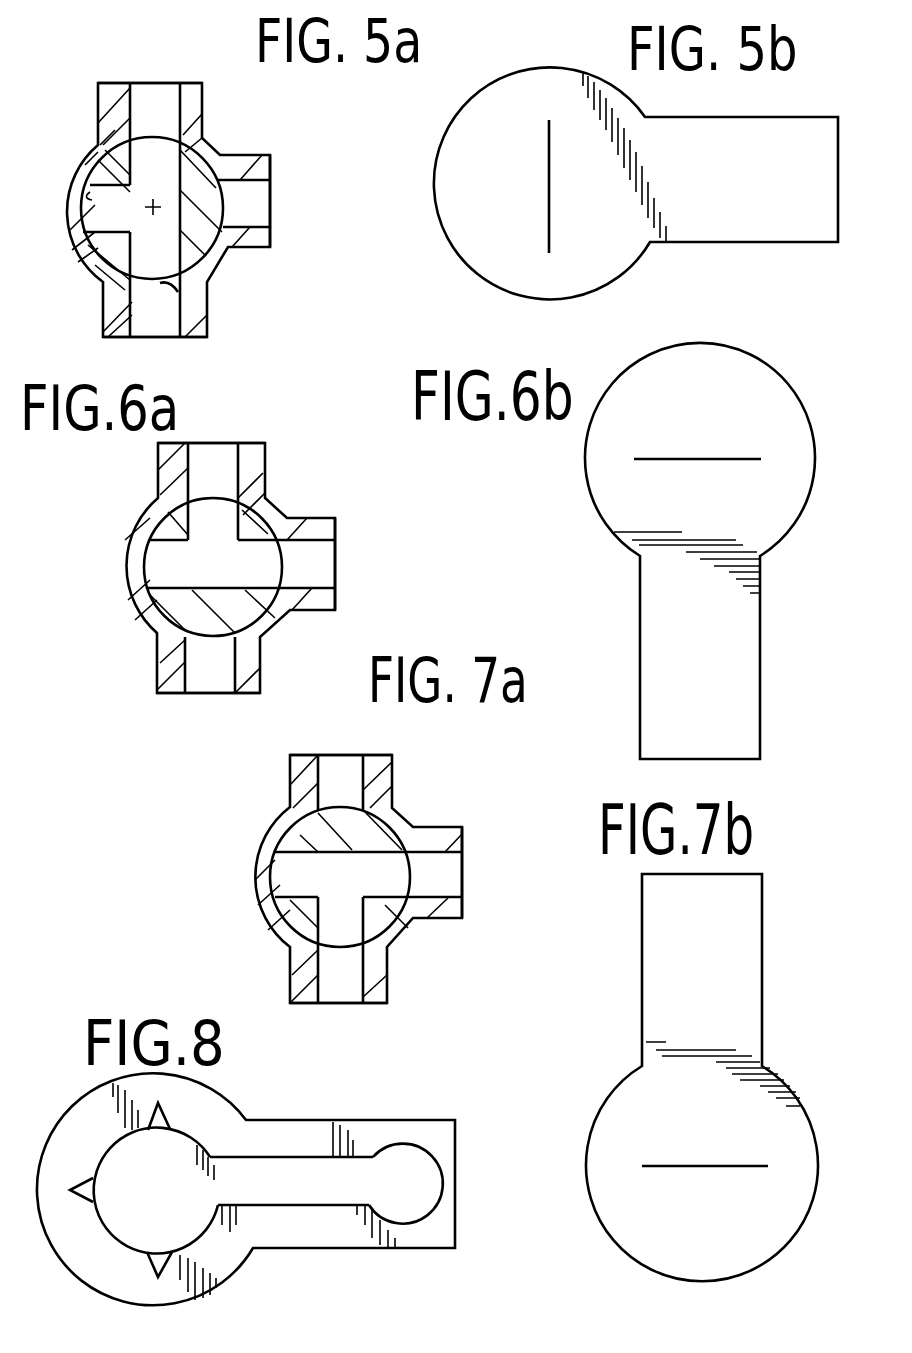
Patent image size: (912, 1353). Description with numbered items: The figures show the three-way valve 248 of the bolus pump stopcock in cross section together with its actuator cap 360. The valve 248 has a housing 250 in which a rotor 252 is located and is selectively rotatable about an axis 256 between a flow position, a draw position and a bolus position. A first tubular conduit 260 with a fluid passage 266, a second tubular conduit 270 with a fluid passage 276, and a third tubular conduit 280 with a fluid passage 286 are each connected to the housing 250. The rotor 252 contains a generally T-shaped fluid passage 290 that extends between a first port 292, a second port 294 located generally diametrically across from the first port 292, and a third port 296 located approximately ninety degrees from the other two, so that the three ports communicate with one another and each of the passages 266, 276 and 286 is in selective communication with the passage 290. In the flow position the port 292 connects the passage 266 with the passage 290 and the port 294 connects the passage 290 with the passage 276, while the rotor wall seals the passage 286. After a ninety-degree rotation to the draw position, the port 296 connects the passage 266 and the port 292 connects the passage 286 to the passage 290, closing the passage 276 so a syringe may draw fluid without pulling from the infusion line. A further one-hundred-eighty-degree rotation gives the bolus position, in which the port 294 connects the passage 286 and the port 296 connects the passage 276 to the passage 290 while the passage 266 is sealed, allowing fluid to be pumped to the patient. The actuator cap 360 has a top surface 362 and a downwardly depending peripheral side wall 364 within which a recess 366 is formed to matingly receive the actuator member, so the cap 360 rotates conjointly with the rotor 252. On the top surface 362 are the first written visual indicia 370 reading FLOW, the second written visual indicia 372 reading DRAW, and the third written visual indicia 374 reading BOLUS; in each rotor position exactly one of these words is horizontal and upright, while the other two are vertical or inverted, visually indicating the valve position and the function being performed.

In FIG. 5A, the three-way valve 248 is at (97, 143).
In FIG. 5A, the housing 250 is at (75, 255).
In FIG. 6A, the housing 250 is at (140, 512).
In FIG. 7A, the housing 250 is at (282, 830).
In FIG. 5A, the rotor 252 is at (197, 168).
In FIG. 6A, the rotor 252 is at (150, 630).
In FIG. 7A, the rotor 252 is at (365, 840).
In FIG. 5A, the axis 256 is at (153, 203).
In FIG. 5A, the first tubular conduit 260 is at (97, 108).
In FIG. 6A, the first tubular conduit 260 is at (158, 455).
In FIG. 7A, the first tubular conduit 260 is at (290, 768).
In FIG. 5A, the fluid passage 266 is at (158, 98).
In FIG. 6A, the fluid passage 266 is at (212, 460).
In FIG. 7A, the fluid passage 266 is at (337, 770).
In FIG. 5A, the second tubular conduit 270 is at (103, 313).
In FIG. 6A, the second tubular conduit 270 is at (157, 680).
In FIG. 7A, the second tubular conduit 270 is at (290, 978).
In FIG. 5A, the fluid passage 276 is at (158, 320).
In FIG. 6A, the fluid passage 276 is at (212, 672).
In FIG. 7A, the fluid passage 276 is at (340, 985).
In FIG. 5A, the third tubular conduit 280 is at (247, 248).
In FIG. 6A, the third tubular conduit 280 is at (288, 515).
In FIG. 7A, the third tubular conduit 280 is at (447, 923).
In FIG. 5A, the fluid passage 286 is at (262, 203).
In FIG. 6A, the fluid passage 286 is at (318, 552).
In FIG. 7A, the fluid passage 286 is at (437, 860).
In FIG. 5A, the fluid passage 290 is at (133, 210).
In FIG. 6A, the fluid passage 290 is at (255, 570).
In FIG. 7A, the fluid passage 290 is at (333, 910).
In FIG. 5A, the first port 292 is at (160, 137).
In FIG. 6A, the first port 292 is at (285, 573).
In FIG. 7A, the first port 292 is at (252, 880).
In FIG. 5A, the second port 294 is at (178, 292).
In FIG. 6A, the second port 294 is at (130, 548).
In FIG. 7A, the second port 294 is at (415, 880).
In FIG. 5A, the third port 296 is at (90, 192).
In FIG. 6A, the third port 296 is at (217, 495).
In FIG. 5B, the actuator cap 360 is at (687, 110).
In FIG. 6B, the actuator cap 360 is at (740, 338).
In FIG. 7B, the actuator cap 360 is at (634, 928).
In FIG. 8, the actuator cap 360 is at (365, 1110).
In FIG. 5B, the top surface 362 is at (518, 272).
In FIG. 6B, the top surface 362 is at (687, 526).
In FIG. 7B, the top surface 362 is at (721, 1104).
In FIG. 8, the peripheral side wall 364 is at (268, 1128).
In FIG. 8, the recess 366 is at (425, 1185).
In FIG. 5B, the first written visual indicia 370 is at (740, 160).
In FIG. 6B, the first written visual indicia 370 is at (727, 657).
In FIG. 7B, the first written visual indicia 370 is at (726, 974).
In FIG. 5B, the second written visual indicia 372 is at (498, 178).
In FIG. 6B, the second written visual indicia 372 is at (748, 422).
In FIG. 7B, the second written visual indicia 372 is at (748, 1198).
In FIG. 5B, the third written visual indicia 374 is at (593, 238).
In FIG. 6B, the third written visual indicia 374 is at (754, 495).
In FIG. 7B, the third written visual indicia 374 is at (758, 1130).